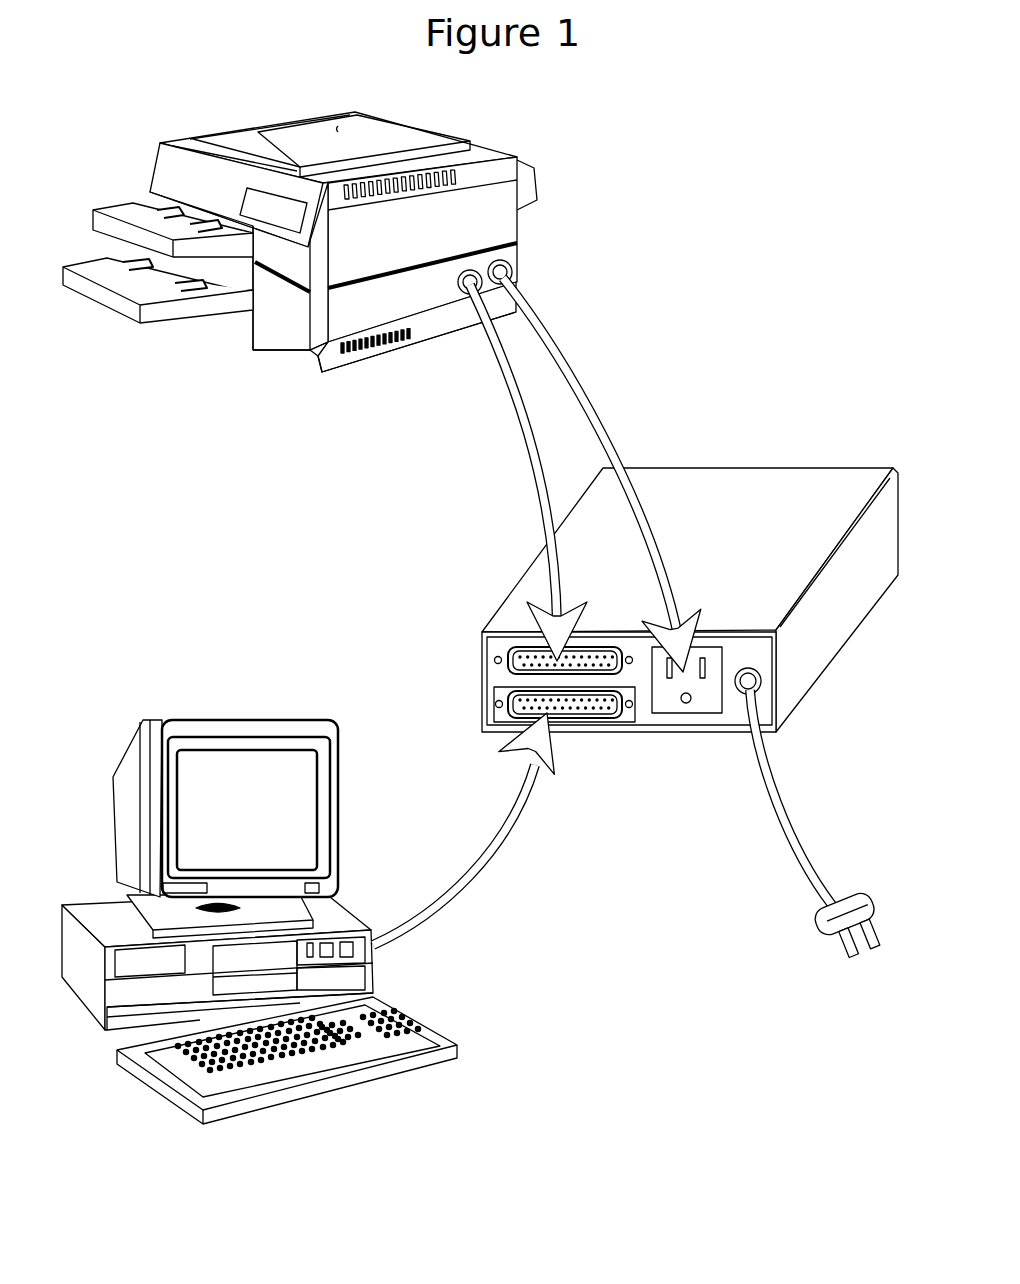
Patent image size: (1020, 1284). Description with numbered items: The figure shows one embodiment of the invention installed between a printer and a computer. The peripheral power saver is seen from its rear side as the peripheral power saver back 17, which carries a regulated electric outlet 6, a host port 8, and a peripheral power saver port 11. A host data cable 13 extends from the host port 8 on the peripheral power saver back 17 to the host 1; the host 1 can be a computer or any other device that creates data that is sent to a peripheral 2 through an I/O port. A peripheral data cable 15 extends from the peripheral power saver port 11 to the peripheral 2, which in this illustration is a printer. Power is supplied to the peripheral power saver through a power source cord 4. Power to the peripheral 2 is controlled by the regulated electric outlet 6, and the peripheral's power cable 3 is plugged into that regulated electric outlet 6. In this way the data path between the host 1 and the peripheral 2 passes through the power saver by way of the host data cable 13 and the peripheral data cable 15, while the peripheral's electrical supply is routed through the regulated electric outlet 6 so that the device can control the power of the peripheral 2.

The computer 1 is at (105, 918).
The printer 2 is at (287, 316).
The printer power cable 3 is at (575, 365).
The power cord and plug 4 is at (772, 803).
The power receptacle 6 is at (710, 698).
The computer-side connector 8 is at (608, 718).
The printer-side connector 11 is at (510, 657).
The computer interface cable 13 is at (455, 883).
The printer interface cable 15 is at (536, 480).
The interface box 17 is at (640, 622).